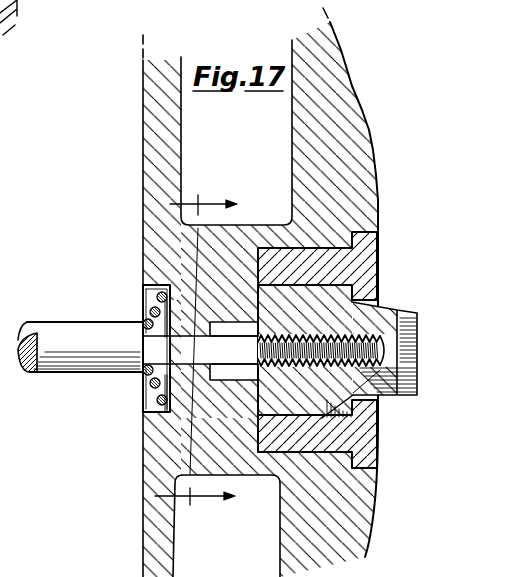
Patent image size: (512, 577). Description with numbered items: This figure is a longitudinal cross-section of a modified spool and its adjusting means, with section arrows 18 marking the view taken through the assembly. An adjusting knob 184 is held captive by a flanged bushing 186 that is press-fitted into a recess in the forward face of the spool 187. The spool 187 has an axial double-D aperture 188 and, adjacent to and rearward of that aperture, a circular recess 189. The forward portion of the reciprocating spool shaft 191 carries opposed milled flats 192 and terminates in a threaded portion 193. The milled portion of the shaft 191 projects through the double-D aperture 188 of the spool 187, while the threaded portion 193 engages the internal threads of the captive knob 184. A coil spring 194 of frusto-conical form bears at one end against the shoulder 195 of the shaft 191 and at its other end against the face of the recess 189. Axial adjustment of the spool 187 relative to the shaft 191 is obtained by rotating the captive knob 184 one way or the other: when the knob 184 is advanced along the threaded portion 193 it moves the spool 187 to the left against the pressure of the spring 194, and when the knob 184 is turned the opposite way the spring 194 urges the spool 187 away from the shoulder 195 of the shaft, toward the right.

The section line of FIG. 18 is at (196, 353).
The adjusting knob 184 is at (388, 306).
The flanged bushing 186 is at (375, 249).
The spool 187 is at (366, 168).
The double-D aperture 188 is at (195, 382).
The circular recess 189 is at (139, 297).
The reciprocating spool shaft 191 is at (67, 321).
The milled flats 192 is at (190, 360).
The threaded portion 193 is at (303, 367).
The coil spring 194 is at (146, 387).
The shoulder 195 is at (140, 347).